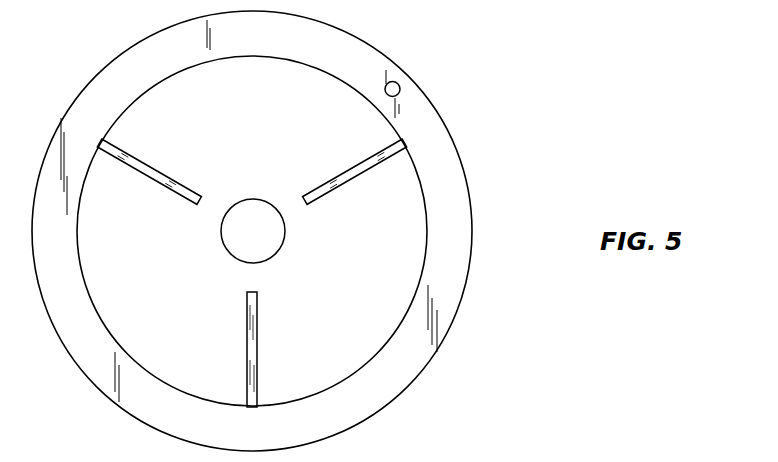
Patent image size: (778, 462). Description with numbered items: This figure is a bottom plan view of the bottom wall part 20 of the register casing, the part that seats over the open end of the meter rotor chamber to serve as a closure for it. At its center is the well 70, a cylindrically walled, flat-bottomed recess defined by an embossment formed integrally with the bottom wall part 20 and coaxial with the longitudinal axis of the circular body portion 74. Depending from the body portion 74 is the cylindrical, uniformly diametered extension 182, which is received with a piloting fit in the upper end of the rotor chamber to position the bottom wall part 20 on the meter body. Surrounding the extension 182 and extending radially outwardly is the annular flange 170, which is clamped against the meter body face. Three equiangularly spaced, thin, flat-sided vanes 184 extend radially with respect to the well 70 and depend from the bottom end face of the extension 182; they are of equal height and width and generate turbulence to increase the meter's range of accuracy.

The bottom wall part 20 is at (431, 91).
The annular flange 170 is at (465, 178).
The well 70 is at (276, 254).
The circular body portion 74 is at (297, 131).
The cylindrical extension 182 is at (172, 388).
The vanes 184 is at (163, 172).